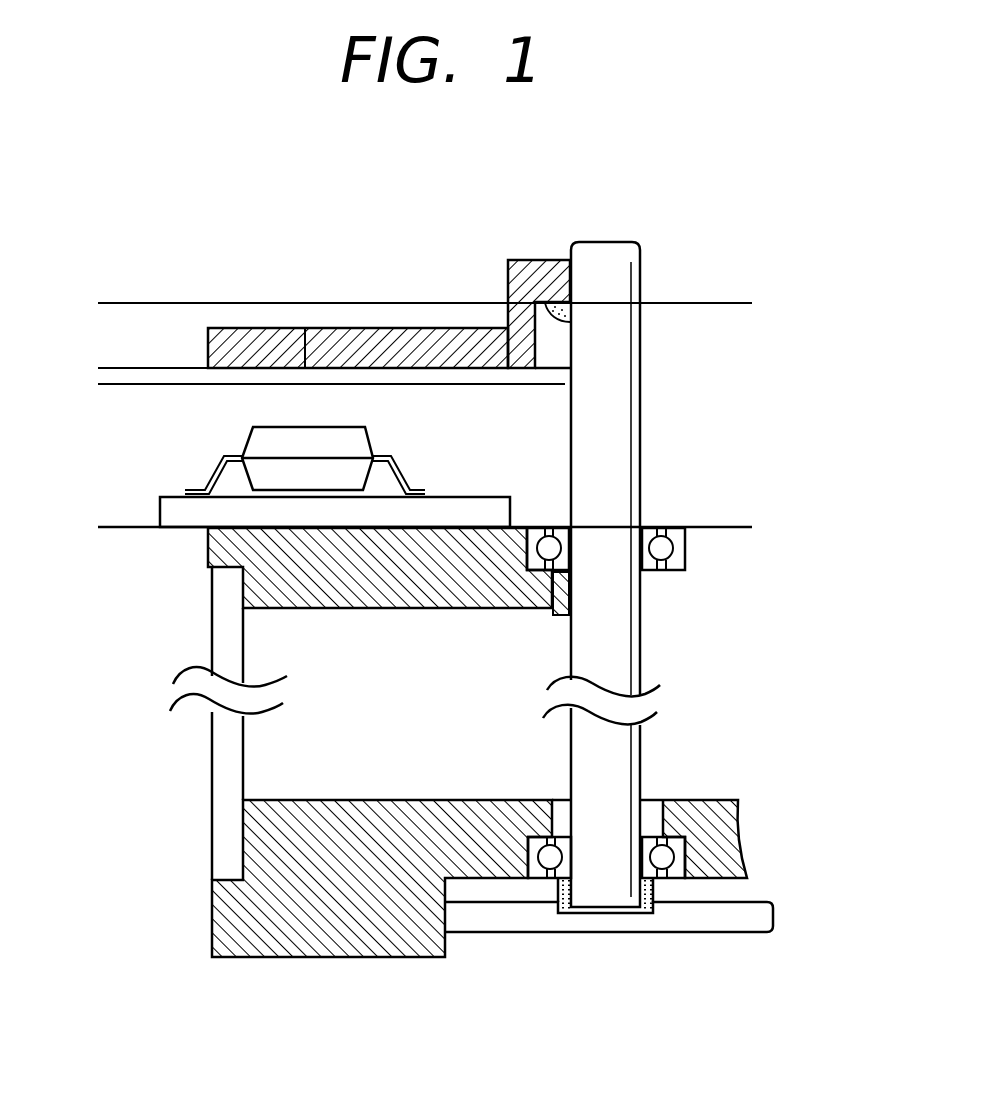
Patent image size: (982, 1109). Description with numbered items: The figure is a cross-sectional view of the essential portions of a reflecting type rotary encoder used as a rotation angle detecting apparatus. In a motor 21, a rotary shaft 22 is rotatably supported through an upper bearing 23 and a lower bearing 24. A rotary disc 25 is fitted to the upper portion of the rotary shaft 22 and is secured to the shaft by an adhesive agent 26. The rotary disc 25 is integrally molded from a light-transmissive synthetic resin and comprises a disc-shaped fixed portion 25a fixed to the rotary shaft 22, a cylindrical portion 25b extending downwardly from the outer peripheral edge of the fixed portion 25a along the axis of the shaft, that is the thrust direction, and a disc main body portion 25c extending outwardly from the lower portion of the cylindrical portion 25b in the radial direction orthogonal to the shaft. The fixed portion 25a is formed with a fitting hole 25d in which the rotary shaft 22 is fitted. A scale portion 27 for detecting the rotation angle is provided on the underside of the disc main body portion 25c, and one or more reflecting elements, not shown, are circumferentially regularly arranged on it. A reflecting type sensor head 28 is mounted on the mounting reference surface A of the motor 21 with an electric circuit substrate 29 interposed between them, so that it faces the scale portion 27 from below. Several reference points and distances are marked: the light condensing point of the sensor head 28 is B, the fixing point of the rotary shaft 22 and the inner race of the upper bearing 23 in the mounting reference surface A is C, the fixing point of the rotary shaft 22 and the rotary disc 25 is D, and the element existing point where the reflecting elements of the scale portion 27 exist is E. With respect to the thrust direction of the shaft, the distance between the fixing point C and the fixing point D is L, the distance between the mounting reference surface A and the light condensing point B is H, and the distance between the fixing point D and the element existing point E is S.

The motor 21 is at (207, 833).
The rotary shaft 22 is at (622, 263).
The upper bearing 23 is at (685, 543).
The lower bearing 24 is at (733, 862).
The rotary disc 25 is at (237, 325).
The fixed portion 25a is at (543, 273).
The cylindrical portion 25b is at (510, 307).
The disc main body portion 25c is at (378, 332).
The fitting hole 25d is at (572, 297).
The adhesive agent 26 is at (571, 315).
The scale portion 27 is at (305, 332).
The reflecting type sensor head 28 is at (373, 438).
The electric circuit substrate 29 is at (192, 512).
The distance between fixing point D and element existing point E S is at (128, 303).
The distance between mounting reference surface A and light condensing point B H is at (128, 384).
The distance between fixing point C and fixing point D L is at (712, 303).
The mounting reference surface A is at (737, 523).
The light condensing point B is at (303, 383).
The fixing point C is at (577, 523).
The fixing point D is at (572, 297).
The element existing point E is at (308, 371).